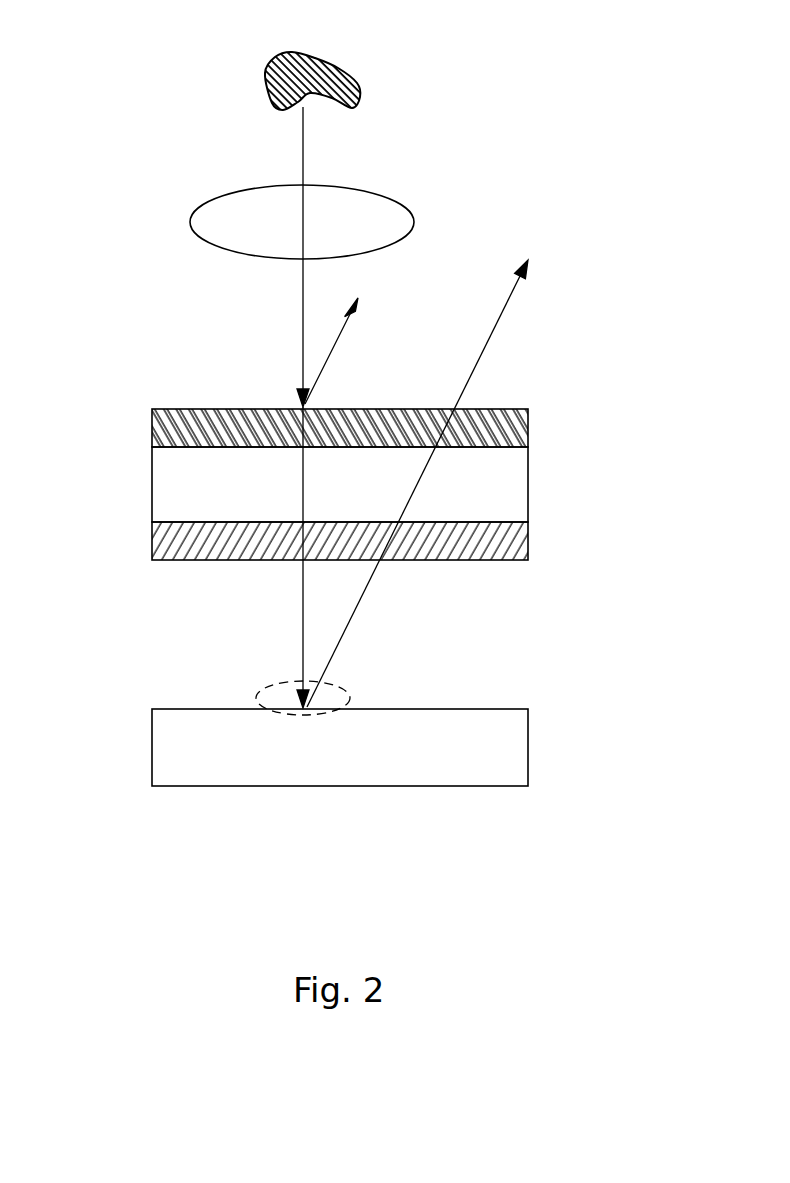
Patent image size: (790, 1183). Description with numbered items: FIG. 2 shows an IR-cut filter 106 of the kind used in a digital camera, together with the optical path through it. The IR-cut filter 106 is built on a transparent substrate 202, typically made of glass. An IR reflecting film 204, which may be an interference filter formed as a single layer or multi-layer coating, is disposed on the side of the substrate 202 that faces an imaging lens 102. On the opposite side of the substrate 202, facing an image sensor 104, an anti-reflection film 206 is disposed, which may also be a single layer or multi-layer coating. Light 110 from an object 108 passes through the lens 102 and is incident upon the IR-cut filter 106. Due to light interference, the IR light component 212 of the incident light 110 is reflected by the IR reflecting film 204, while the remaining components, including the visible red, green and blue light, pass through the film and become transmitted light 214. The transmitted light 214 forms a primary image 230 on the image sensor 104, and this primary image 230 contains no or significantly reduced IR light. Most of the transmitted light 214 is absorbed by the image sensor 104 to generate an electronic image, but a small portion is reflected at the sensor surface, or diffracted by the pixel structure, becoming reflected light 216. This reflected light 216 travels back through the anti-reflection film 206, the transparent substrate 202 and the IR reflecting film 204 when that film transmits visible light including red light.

The imaging lens 102 is at (302, 222).
The image sensor 104 is at (340, 747).
The IR-cut filter 106 is at (342, 490).
The object 108 is at (352, 80).
The incident light 110 is at (302, 360).
The transparent substrate 202 is at (152, 484).
The IR reflecting film 204 is at (152, 428).
The anti-reflection film 206 is at (152, 540).
The IR light component 212 is at (333, 352).
The transmitted light 214 is at (303, 660).
The reflected light 216 is at (480, 360).
The primary image 230 is at (322, 717).